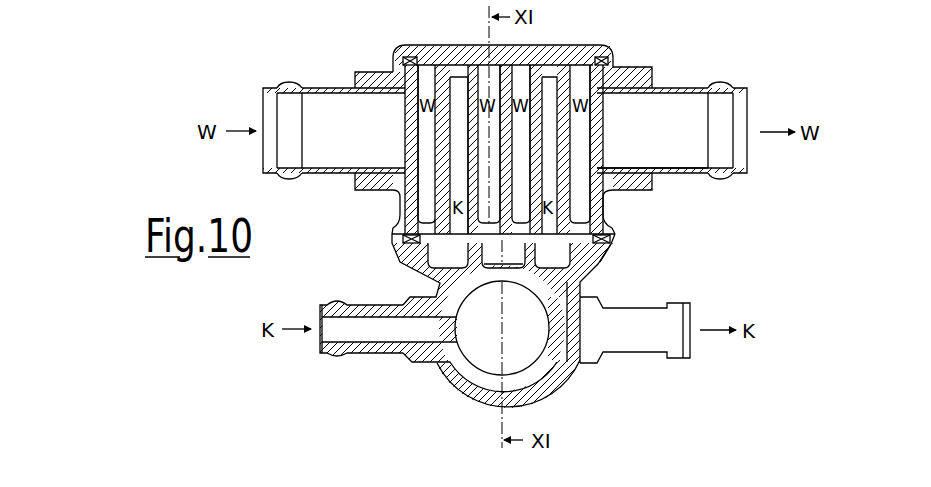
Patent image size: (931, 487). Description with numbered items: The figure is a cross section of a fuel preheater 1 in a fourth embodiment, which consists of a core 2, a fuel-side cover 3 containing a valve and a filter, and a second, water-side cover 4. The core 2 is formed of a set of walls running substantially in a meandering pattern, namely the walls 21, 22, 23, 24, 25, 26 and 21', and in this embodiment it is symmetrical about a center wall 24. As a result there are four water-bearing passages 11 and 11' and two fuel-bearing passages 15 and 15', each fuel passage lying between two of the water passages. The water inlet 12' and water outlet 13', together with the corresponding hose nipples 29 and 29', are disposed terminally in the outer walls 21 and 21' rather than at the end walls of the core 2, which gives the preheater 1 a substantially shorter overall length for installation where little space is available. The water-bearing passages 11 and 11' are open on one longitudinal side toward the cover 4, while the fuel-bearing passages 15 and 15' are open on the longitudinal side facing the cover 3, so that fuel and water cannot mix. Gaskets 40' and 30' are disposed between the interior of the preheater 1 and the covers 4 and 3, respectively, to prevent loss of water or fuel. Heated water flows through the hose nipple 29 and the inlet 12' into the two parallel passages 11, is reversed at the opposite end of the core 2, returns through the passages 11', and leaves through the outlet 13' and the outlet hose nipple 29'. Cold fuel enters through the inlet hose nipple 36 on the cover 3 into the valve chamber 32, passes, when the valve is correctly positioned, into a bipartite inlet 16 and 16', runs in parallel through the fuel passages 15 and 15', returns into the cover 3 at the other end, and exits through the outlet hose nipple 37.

The preheater 1 is at (600, 40).
The core 2 is at (397, 77).
The fuel-side cover 3 is at (397, 250).
The water-side cover 4 is at (592, 50).
The water-bearing passages 11 is at (437, 121).
The water-bearing passages 11' is at (556, 120).
The water inlet 12' is at (336, 106).
The water outlet 13' is at (672, 93).
The fuel-bearing passage 15 is at (363, 218).
The fuel-bearing passage 15' is at (634, 224).
The coolant pocket 16 is at (414, 269).
The bipartite inlet 16' is at (595, 269).
The outer wall 21 is at (341, 198).
The outer wall 21' is at (663, 228).
The wall 22 is at (482, 62).
The wall 23 is at (492, 66).
The center wall 24 is at (615, 85).
The wall 25 is at (613, 183).
The wall 26 is at (670, 177).
The hose nipple 29 is at (287, 93).
The outlet hose nipple 29' is at (749, 98).
The gasket 30' is at (653, 269).
The valve chamber 32 is at (522, 352).
The inlet hose nipple 36 is at (350, 352).
The outlet hose nipple 37 is at (642, 343).
The gasket 40' is at (387, 37).